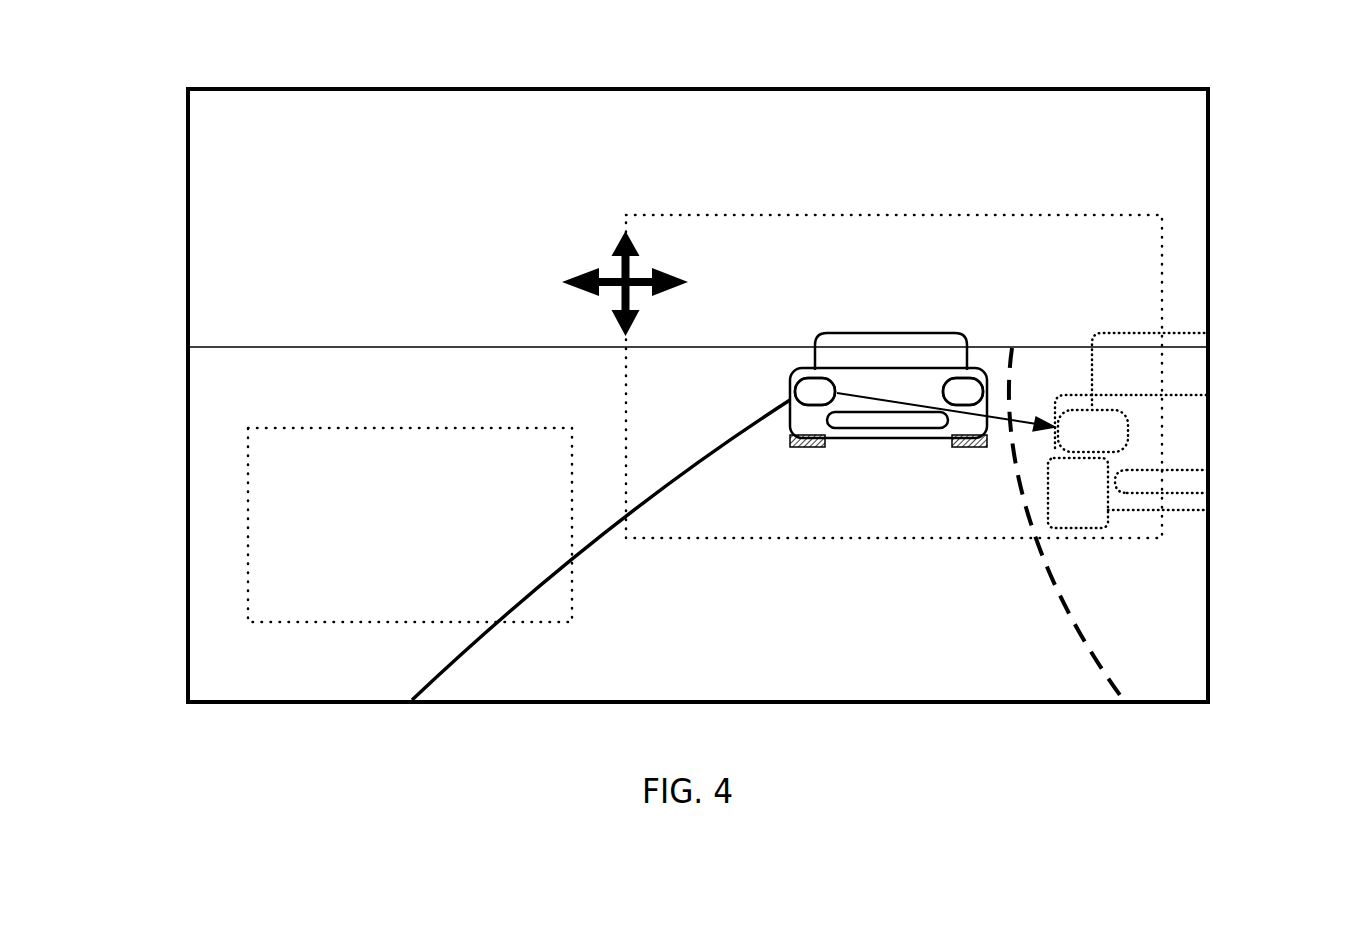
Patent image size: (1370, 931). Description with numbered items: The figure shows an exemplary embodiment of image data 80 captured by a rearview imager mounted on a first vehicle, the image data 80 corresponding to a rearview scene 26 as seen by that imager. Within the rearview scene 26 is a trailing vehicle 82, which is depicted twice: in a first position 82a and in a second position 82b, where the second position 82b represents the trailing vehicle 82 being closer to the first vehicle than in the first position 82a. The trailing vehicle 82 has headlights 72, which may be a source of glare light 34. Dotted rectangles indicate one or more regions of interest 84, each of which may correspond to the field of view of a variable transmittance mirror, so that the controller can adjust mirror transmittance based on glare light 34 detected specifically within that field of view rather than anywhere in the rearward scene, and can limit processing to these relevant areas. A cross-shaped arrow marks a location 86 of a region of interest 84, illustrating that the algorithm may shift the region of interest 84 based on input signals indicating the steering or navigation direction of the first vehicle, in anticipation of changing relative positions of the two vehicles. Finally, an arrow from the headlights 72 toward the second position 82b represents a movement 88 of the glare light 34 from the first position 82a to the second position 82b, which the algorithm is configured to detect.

The rearview scene 26 is at (640, 383).
The image data 80 is at (215, 125).
The region of interest 84 is at (248, 543).
The location 86 is at (622, 268).
The trailing vehicle 82 is at (1027, 413).
The first position 82a is at (813, 353).
The second position 82b is at (1213, 487).
The glare light 34 is at (952, 339).
The headlights 72 is at (815, 378).
The movement 88 is at (995, 417).